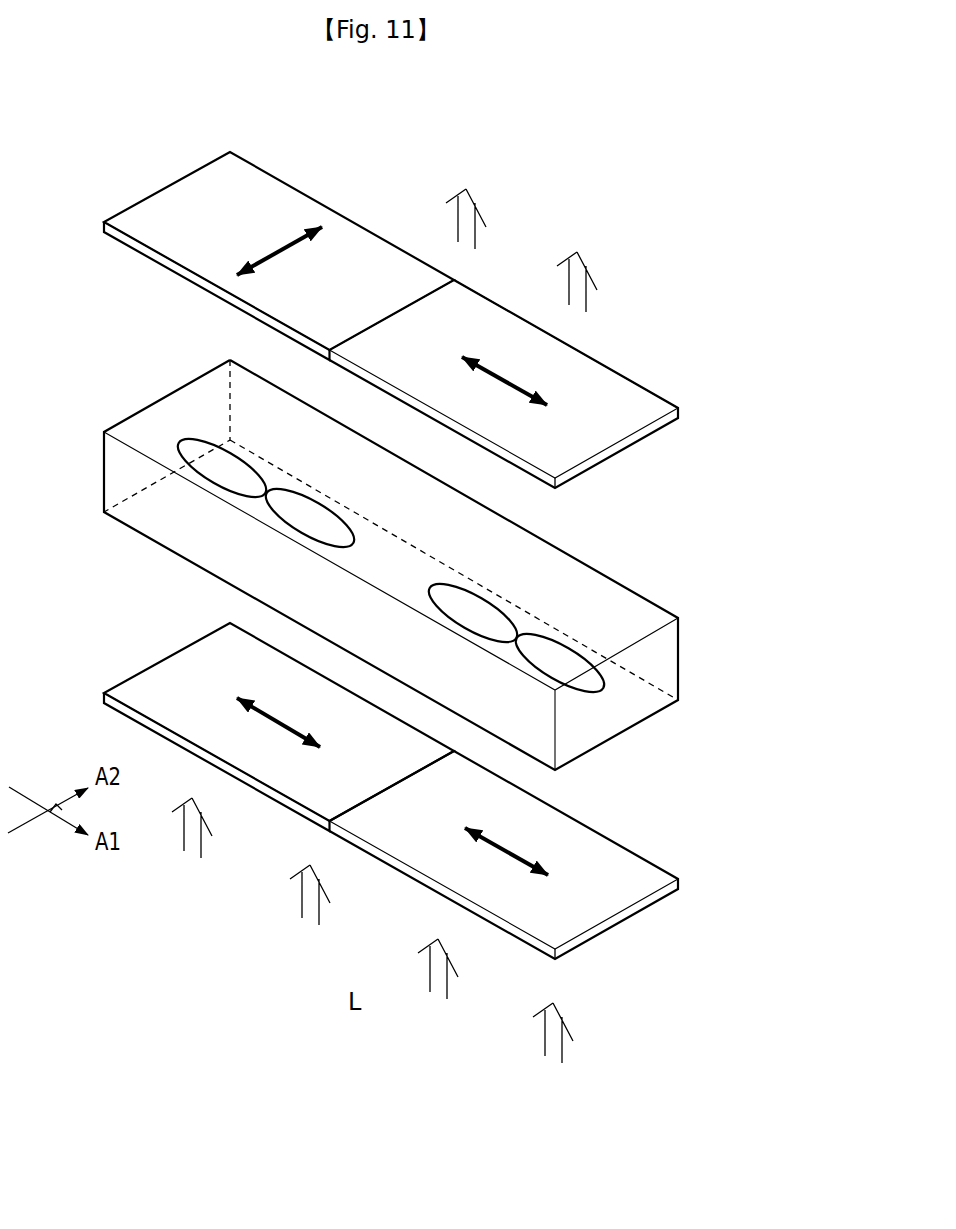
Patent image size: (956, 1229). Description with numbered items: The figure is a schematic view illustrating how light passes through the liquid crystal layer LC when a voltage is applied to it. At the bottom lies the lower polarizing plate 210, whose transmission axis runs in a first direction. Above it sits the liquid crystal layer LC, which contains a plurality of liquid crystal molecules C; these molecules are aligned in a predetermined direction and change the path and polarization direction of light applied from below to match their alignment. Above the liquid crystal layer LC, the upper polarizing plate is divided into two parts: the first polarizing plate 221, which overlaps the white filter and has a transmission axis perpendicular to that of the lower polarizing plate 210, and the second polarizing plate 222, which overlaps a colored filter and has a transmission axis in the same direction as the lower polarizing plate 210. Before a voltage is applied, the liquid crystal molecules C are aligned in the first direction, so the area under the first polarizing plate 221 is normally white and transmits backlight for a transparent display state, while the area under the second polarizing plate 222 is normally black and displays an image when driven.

The second polarizing plate 222 is at (367, 242).
The first polarizing plate 221 is at (623, 390).
The lower polarizing plate 210 is at (615, 918).
The liquid crystal layer LC is at (673, 662).
The liquid crystal molecules C is at (593, 683).